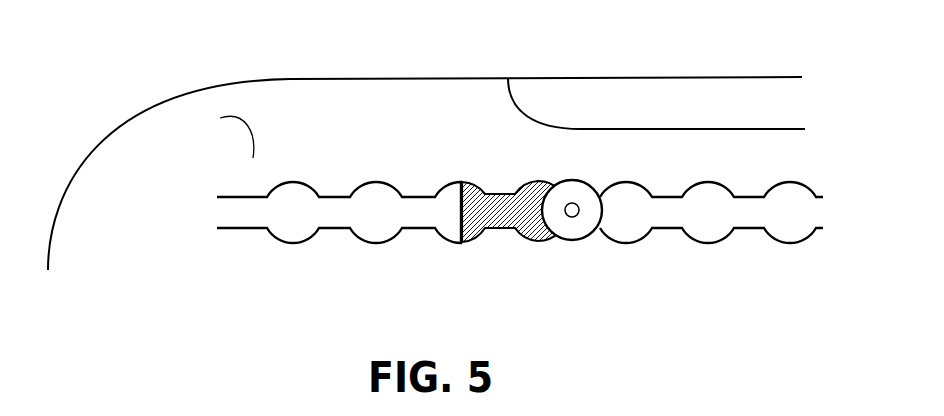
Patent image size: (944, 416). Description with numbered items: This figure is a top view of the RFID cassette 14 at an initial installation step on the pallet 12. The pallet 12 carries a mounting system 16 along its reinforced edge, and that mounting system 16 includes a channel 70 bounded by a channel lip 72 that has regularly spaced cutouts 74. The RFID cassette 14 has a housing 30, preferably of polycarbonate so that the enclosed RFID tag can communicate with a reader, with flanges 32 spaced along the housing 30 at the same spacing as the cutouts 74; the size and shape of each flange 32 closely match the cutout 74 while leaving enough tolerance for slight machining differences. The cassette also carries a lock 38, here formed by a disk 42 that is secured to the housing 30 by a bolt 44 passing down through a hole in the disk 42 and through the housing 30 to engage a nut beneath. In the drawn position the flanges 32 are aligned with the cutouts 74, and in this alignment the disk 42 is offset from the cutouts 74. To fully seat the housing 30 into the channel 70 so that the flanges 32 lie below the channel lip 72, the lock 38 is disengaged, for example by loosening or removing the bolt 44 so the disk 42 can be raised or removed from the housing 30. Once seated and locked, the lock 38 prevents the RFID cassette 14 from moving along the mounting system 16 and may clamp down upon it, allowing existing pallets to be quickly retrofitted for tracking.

The pallet 12 is at (275, 80).
The RFID cassette 14 is at (457, 160).
The mounting system 16 is at (226, 136).
The housing 30 is at (499, 227).
The flanges 32 is at (537, 181).
The lock 38 is at (570, 166).
The disk 42 is at (573, 228).
The bolt 44 is at (576, 202).
The channel 70 is at (206, 213).
The channel lip 72 is at (327, 230).
The cutouts 74 is at (623, 232).